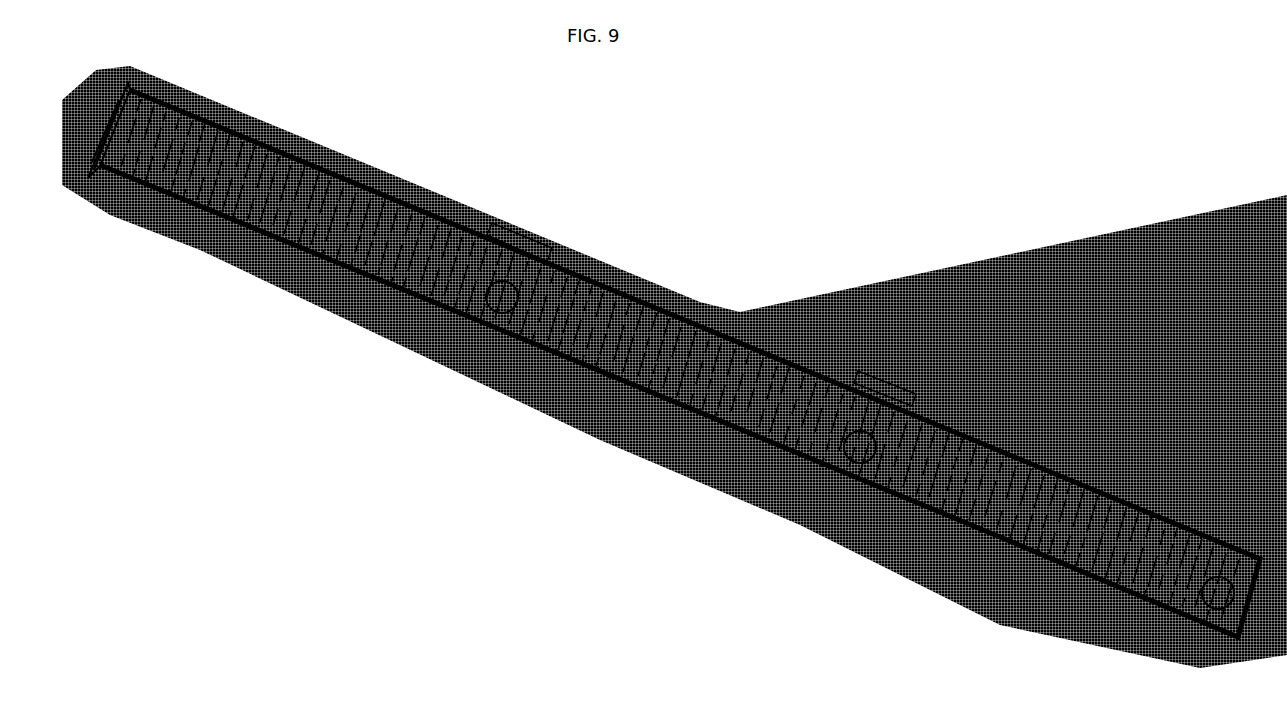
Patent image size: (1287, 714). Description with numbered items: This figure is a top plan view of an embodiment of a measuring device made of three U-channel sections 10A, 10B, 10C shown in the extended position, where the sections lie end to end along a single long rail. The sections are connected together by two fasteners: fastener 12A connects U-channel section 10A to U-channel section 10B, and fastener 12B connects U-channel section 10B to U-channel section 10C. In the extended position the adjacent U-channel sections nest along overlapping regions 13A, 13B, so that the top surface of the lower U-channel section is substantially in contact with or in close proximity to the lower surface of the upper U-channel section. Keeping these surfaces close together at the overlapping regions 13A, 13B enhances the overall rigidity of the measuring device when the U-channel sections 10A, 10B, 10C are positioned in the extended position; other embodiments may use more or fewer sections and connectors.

The U-channel section 10A is at (1067, 567).
The U-channel section 10B is at (662, 400).
The U-channel section 10C is at (230, 225).
The fastener 12A is at (852, 461).
The fastener 12B is at (490, 312).
The overlapping region 13A is at (892, 380).
The overlapping region 13B is at (523, 232).